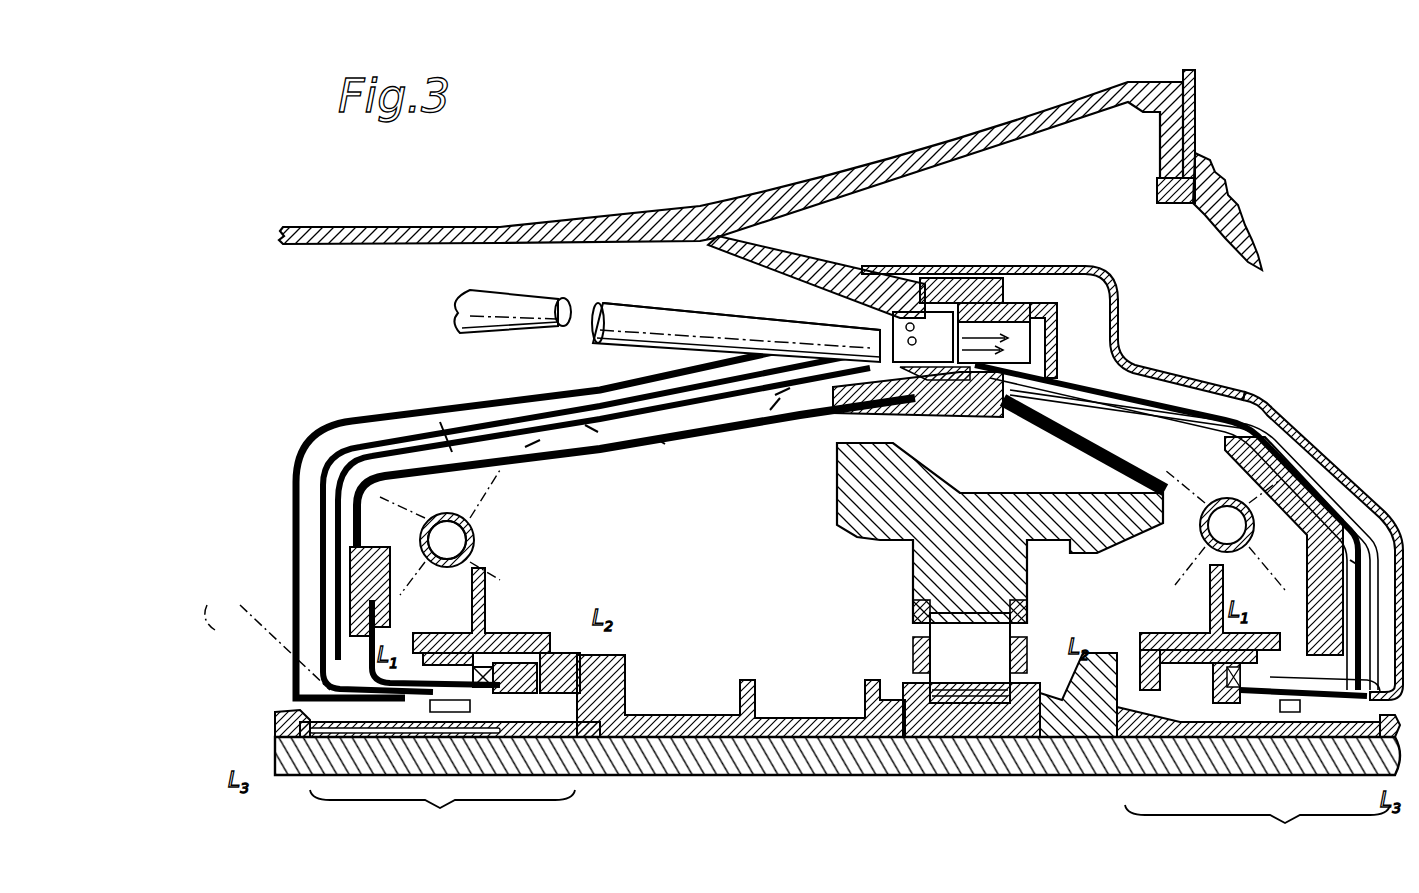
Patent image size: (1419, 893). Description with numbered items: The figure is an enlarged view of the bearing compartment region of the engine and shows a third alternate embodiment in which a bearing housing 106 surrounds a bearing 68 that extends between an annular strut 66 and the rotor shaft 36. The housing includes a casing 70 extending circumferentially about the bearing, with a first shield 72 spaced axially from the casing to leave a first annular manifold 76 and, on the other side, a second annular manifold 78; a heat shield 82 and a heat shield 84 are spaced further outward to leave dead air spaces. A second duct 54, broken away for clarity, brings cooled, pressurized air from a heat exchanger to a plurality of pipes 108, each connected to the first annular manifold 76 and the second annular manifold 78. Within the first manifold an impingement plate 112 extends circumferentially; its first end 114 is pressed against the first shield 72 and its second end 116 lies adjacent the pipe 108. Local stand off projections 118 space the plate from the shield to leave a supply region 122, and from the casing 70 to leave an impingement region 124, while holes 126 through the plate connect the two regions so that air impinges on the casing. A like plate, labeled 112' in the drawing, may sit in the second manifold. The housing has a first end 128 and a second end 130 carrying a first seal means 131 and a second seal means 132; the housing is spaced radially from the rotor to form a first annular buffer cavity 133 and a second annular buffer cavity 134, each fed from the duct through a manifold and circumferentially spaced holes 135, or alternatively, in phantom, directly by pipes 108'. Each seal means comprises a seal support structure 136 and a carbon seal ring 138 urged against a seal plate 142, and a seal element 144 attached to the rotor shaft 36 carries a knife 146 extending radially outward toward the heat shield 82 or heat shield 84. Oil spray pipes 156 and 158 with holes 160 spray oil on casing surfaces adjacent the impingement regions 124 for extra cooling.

The rotor shaft 36 is at (878, 758).
The second duct 54 is at (530, 303).
The annular strut 66 is at (965, 290).
The bearing 68 is at (985, 674).
The casing 70 is at (915, 400).
The first shield 72 is at (330, 640).
The first annular manifold 76 is at (780, 395).
The second annular manifold 78 is at (1182, 412).
The heat shield 82 is at (345, 452).
The heat shield 84 is at (1398, 536).
The bearing housing 106 is at (705, 293).
The pipes 108 is at (723, 296).
The pipes 108' is at (238, 562).
The impingement plate 112 is at (691, 464).
The seal (alternate) 112' is at (1384, 507).
The first end 114 is at (332, 625).
The second end 116 is at (1110, 418).
The local stand off projections 118 is at (810, 368).
The supply region 122 is at (1228, 412).
The impingement region 124 is at (318, 570).
The holes 126 is at (1305, 470).
The first end 128 is at (442, 811).
The second end 130 is at (1257, 826).
The first seal means 131 is at (608, 594).
The second seal means 132 is at (1120, 638).
The first annular buffer cavity 133 is at (500, 625).
The second annular buffer cavity 134 is at (1253, 717).
The holes 135 is at (470, 702).
The seal support structure 136 is at (432, 650).
The carbon seal ring 138 is at (576, 580).
The seal plate 142 is at (640, 658).
The seal element 144 is at (628, 672).
The knife 146 is at (300, 776).
The oil spray pipe 156 is at (478, 530).
The oil spray pipe 158 is at (1200, 540).
The holes 160 is at (440, 522).